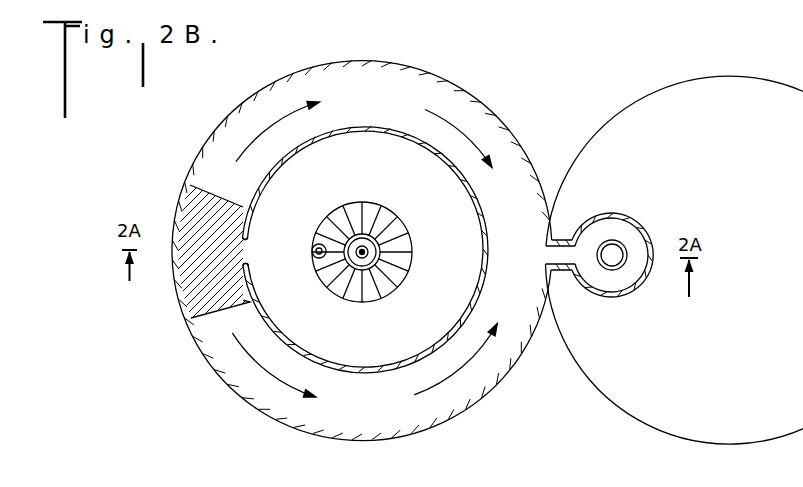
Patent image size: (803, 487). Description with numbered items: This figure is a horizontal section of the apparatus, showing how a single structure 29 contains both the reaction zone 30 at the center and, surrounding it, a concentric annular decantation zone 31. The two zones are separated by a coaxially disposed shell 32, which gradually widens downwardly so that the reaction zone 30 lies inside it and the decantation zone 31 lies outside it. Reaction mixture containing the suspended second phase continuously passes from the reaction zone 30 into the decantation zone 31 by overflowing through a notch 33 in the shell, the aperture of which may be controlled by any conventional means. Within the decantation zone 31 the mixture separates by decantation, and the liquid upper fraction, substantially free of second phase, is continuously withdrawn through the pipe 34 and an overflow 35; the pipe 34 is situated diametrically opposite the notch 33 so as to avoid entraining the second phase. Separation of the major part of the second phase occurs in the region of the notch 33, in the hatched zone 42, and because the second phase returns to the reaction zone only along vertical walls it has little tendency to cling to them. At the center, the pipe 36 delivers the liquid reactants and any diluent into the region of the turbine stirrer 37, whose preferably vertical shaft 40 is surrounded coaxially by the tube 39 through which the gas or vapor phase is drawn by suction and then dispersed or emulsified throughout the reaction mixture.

The single structure 29 is at (500, 122).
The reaction zone 30 is at (372, 358).
The decantation zone 31 is at (518, 288).
The shell 32 is at (437, 152).
The notch 33 is at (243, 243).
The pipe 34 is at (558, 237).
The overflow 35 is at (623, 235).
The pipe 36 is at (315, 244).
The turbine stirrer 37 is at (406, 223).
The tube 39 is at (378, 263).
The shaft 40 is at (368, 251).
The hatched zone 42 is at (205, 277).